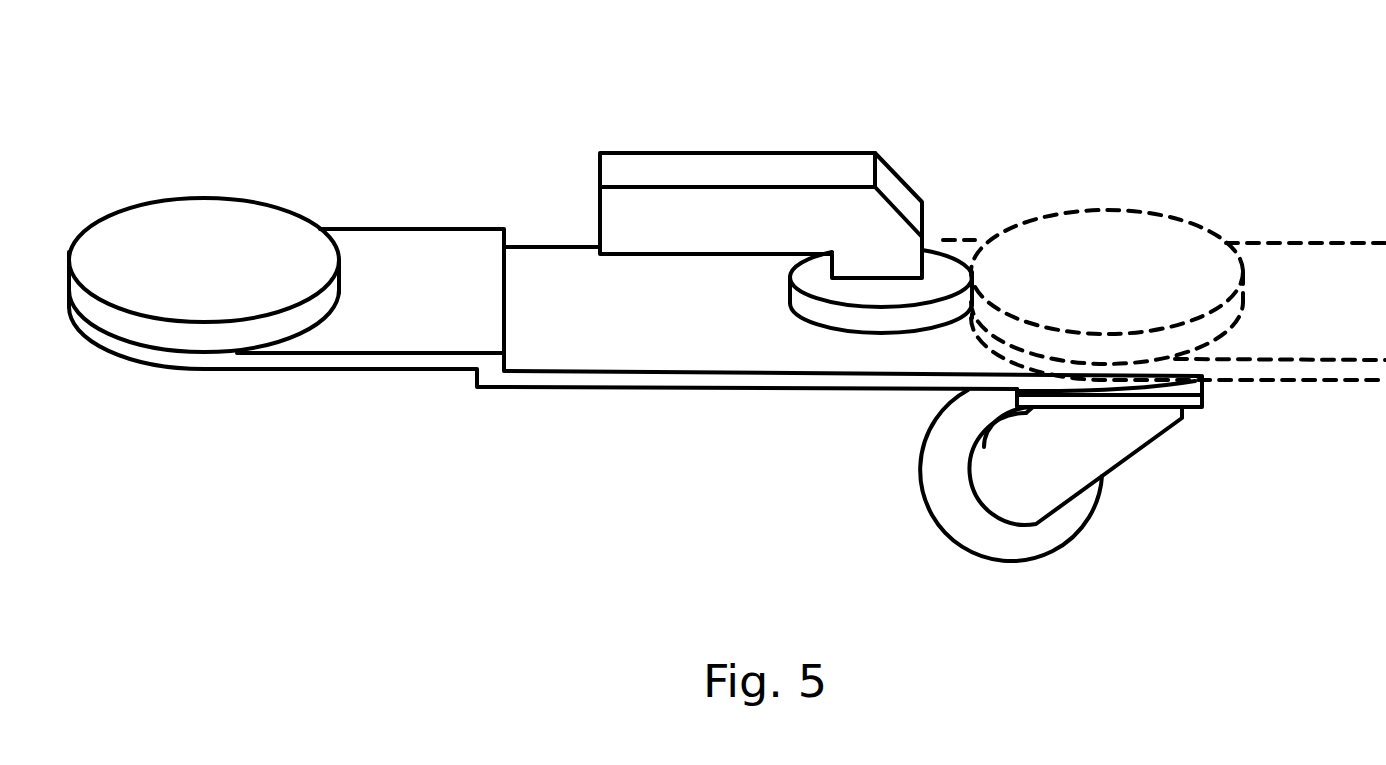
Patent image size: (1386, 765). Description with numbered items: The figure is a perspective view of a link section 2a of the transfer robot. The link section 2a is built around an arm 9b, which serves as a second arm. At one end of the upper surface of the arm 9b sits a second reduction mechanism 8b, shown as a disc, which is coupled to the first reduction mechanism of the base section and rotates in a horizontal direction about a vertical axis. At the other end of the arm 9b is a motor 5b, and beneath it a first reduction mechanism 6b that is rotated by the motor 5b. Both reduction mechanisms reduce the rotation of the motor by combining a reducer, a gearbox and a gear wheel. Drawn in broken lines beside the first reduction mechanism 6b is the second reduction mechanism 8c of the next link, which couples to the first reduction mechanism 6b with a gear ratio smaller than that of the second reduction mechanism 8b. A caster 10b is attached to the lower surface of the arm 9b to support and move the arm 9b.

The link section 2a is at (471, 168).
The motor 5b is at (643, 170).
The first reduction mechanism 6b is at (940, 265).
The second reduction mechanism 8b is at (257, 233).
The second reduction mechanism 8c is at (1150, 232).
The arm 9b is at (583, 350).
The caster 10b is at (933, 483).